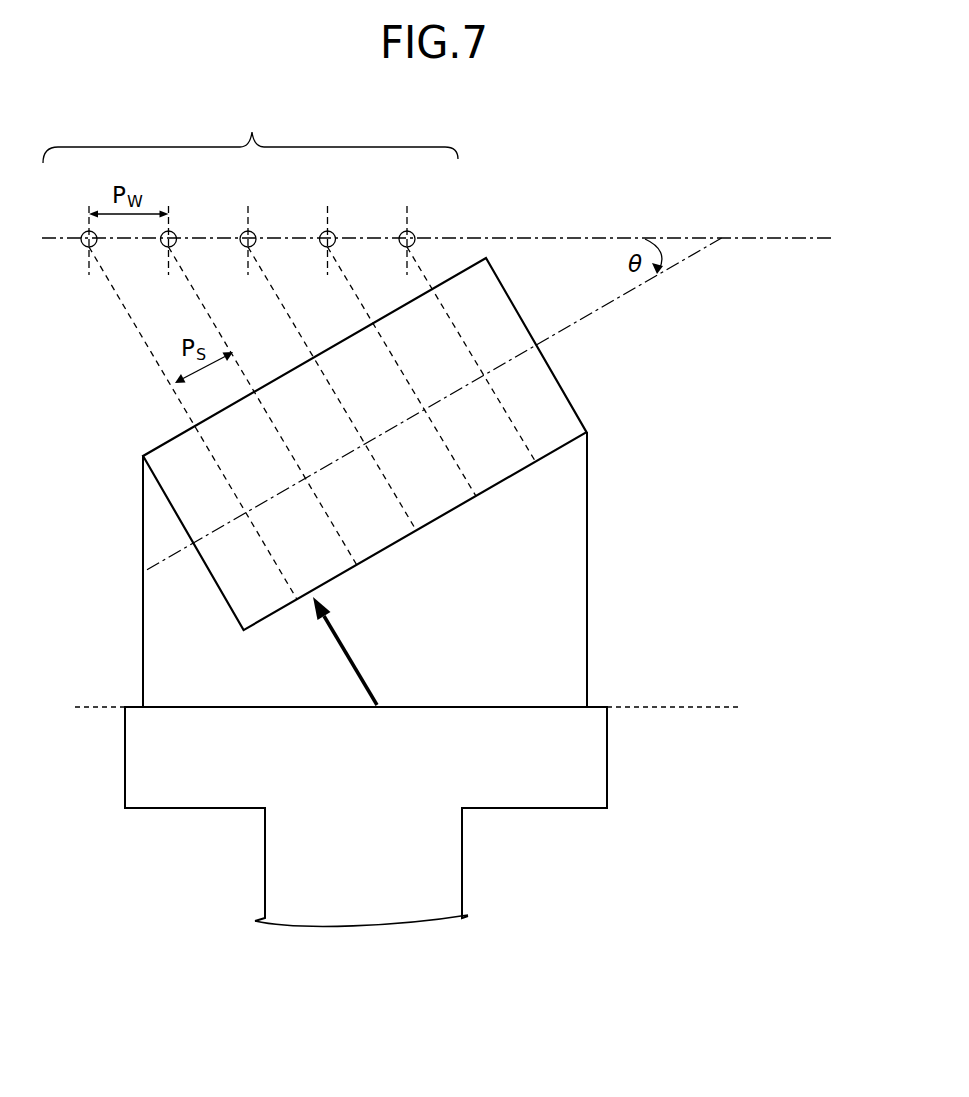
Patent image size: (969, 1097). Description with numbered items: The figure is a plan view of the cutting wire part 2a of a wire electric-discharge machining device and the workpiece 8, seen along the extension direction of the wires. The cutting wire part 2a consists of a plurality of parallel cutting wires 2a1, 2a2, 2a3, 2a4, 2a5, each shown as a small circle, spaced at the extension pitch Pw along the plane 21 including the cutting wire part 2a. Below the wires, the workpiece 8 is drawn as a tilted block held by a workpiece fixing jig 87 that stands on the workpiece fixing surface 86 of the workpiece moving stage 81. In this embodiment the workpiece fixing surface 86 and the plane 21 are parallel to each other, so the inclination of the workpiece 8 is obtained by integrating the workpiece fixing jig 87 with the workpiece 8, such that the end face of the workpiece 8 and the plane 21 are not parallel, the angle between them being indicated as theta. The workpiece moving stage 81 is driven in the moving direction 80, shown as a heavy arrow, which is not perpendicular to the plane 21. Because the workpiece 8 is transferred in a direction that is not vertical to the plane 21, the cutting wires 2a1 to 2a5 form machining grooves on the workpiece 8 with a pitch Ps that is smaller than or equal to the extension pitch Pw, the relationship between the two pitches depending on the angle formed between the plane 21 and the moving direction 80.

The cutting wire part 2a is at (289, 351).
The cutting wire 2a1 is at (84, 232).
The cutting wire 2a2 is at (174, 232).
The cutting wire 2a3 is at (254, 232).
The cutting wire 2a4 is at (333, 232).
The cutting wire 2a5 is at (412, 232).
The plane including the cutting wire part 21 is at (600, 233).
The workpiece 8 is at (168, 500).
The moving direction 80 is at (343, 658).
The workpiece moving stage 81 is at (266, 862).
The workpiece fixing surface 86 is at (693, 708).
The workpiece fixing jig 87 is at (567, 630).